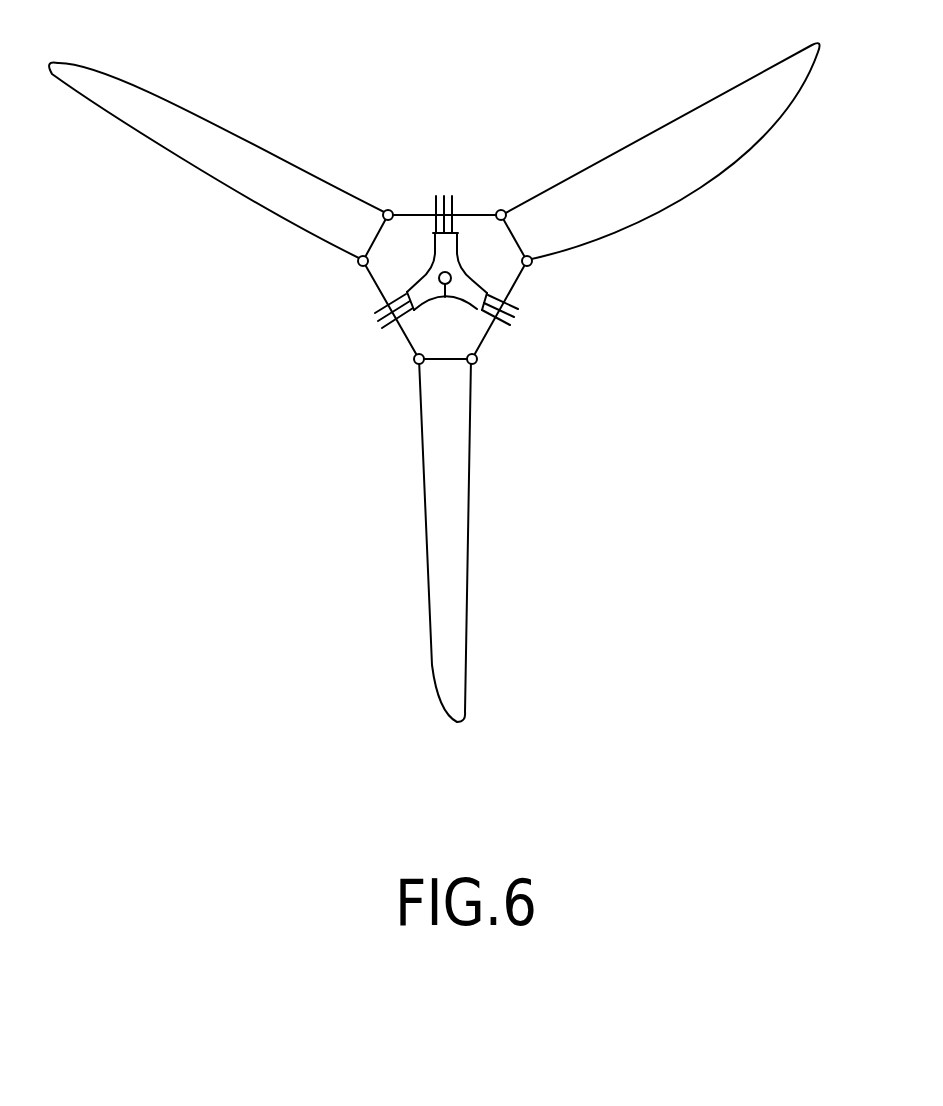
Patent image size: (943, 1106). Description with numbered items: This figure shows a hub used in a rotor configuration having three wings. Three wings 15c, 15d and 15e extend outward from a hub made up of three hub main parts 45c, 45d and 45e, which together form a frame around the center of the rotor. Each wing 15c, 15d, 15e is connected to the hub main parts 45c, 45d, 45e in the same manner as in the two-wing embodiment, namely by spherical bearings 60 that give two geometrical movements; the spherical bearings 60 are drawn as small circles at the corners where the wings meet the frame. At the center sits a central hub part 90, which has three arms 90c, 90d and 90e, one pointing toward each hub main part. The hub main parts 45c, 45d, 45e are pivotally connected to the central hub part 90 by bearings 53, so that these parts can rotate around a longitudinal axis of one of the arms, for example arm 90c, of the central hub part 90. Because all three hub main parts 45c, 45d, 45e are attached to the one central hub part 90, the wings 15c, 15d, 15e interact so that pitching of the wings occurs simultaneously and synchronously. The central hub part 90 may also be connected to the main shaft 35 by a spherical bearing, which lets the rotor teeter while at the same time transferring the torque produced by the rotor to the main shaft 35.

The wing 15c is at (673, 140).
The wing 15d is at (455, 534).
The wing 15e is at (225, 153).
The main shaft 35 is at (445, 297).
The hub main part 45c is at (478, 213).
The hub main part 45d is at (520, 284).
The hub main part 45e is at (372, 279).
The bearings 53 is at (448, 200).
The spherical bearings 60 is at (532, 262).
The central hub part 90 is at (487, 244).
The arm of the central hub part 90c is at (443, 254).
The arm of the central hub part 90d is at (475, 297).
The arm of the central hub part 90e is at (415, 297).